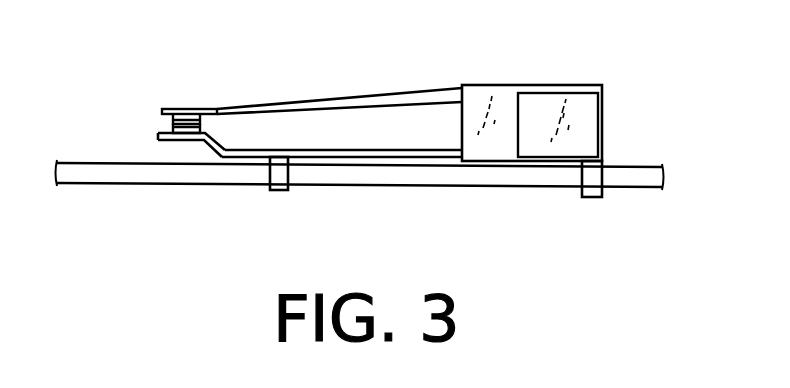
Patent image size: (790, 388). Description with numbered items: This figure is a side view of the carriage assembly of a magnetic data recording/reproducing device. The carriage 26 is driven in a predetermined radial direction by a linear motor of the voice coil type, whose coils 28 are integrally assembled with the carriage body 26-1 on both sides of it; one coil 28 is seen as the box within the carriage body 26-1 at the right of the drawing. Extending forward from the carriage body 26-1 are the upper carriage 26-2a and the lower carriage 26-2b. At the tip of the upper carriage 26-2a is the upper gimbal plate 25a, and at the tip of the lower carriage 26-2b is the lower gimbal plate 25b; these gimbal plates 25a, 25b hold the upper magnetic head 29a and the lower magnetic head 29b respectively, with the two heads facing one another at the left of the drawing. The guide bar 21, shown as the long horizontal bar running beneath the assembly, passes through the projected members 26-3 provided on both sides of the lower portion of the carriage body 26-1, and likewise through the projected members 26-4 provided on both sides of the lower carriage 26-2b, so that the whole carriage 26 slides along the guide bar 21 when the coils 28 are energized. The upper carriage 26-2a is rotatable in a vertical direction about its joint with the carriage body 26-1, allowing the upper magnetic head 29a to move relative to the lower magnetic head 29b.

The guide bar 21 is at (132, 182).
The upper gimbal plate 25a is at (182, 108).
The lower gimbal plate 25b is at (158, 137).
The upper magnetic head 29a is at (153, 110).
The lower magnetic head 29b is at (172, 126).
The carriage 26 is at (567, 144).
The carriage body 26-1 is at (502, 105).
The upper carriage 26-2a is at (332, 100).
The lower carriage 26-2b is at (378, 157).
The projected members 26-3 is at (592, 198).
The projected members 26-4 is at (275, 192).
The coils 28 is at (582, 118).